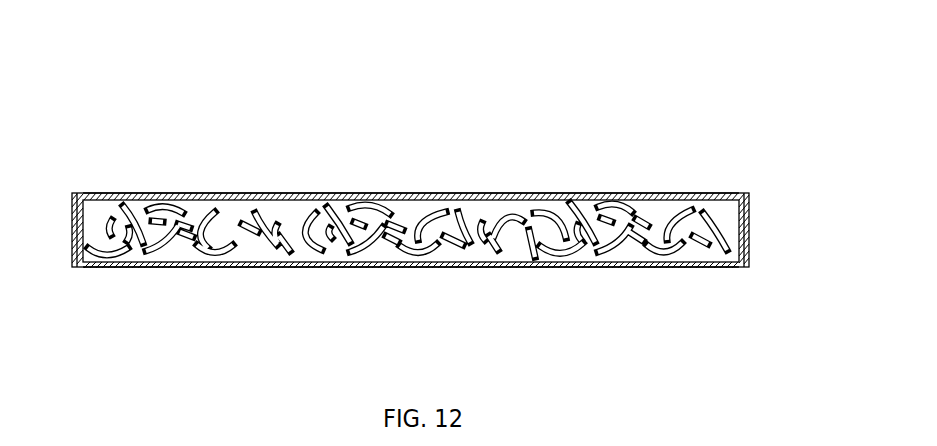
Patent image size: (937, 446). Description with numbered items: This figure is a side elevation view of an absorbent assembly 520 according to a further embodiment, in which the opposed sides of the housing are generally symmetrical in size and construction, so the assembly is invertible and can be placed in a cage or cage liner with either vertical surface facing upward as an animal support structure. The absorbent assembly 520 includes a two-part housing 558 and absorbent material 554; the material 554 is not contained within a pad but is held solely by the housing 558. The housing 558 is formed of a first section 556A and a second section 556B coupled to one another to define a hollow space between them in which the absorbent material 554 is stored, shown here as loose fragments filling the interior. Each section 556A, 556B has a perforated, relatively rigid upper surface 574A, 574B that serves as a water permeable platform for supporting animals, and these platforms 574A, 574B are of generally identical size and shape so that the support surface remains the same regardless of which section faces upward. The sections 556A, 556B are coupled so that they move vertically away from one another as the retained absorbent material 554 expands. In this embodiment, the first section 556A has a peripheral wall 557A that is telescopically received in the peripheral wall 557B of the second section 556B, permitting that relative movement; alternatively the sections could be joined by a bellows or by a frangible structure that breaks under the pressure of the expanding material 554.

The absorbent assembly 520 is at (98, 123).
The housing 558 is at (222, 183).
The upper surface 574A is at (425, 193).
The upper surface 574B is at (430, 267).
The first section 556A is at (573, 193).
The second section 556B is at (633, 267).
The peripheral wall 557A is at (750, 218).
The peripheral wall 557B is at (750, 247).
The absorbent material 554 is at (147, 220).